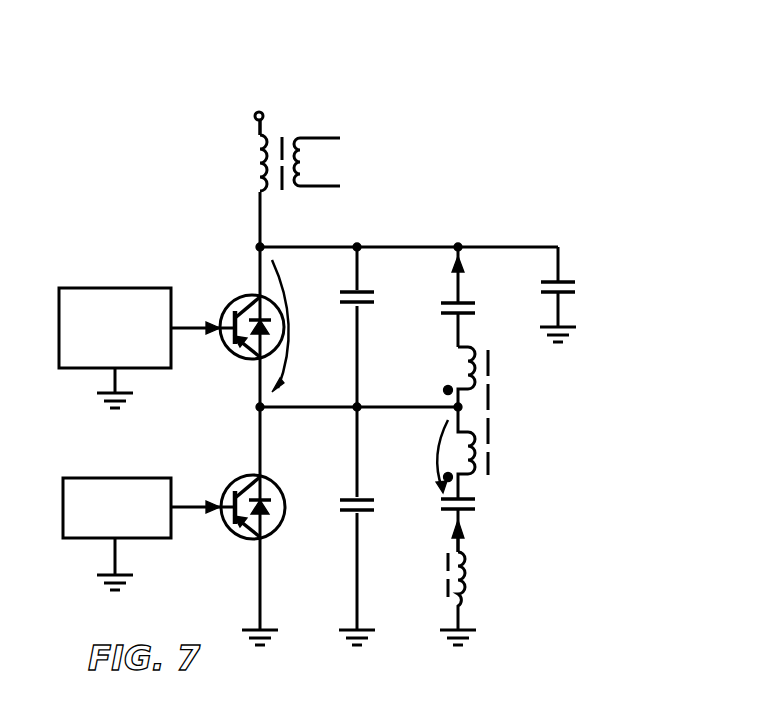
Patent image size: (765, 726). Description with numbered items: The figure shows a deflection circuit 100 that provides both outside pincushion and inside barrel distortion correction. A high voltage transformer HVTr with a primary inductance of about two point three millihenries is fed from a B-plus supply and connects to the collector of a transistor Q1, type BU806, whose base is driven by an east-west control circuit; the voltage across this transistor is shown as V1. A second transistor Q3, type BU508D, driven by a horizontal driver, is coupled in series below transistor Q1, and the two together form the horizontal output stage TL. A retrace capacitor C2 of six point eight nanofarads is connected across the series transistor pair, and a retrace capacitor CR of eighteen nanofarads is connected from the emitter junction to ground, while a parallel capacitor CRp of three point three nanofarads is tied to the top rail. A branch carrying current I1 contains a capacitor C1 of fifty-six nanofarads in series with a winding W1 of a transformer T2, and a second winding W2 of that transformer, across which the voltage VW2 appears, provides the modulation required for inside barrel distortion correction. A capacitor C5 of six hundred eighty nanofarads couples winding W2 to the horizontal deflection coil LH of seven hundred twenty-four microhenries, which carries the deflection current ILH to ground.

The deflection circuit 100 is at (350, 696).
The transistor Q1 is at (226, 293).
The transistor BU508D Q3 is at (244, 540).
The capacitor C1 is at (480, 321).
The retrace capacitor C2 is at (380, 327).
The capacitor 680 nF C5 is at (508, 523).
The retrace capacitor 18n CR is at (340, 526).
The capacitor 3n3 CRp is at (582, 294).
The horizontal deflection coil 724 uH LH is at (511, 598).
The transformer T2 is at (533, 423).
The winding W1' 1.4mH W1 is at (533, 377).
The winding W2 is at (530, 453).
The horizontal output stage TL is at (257, 81).
The high voltage transformer 2.3 mH HVTr is at (261, 151).
The voltage V1 is at (304, 326).
The voltage across W2' VW2 is at (413, 456).
The current I1 is at (478, 275).
The deflection current ILH is at (481, 536).